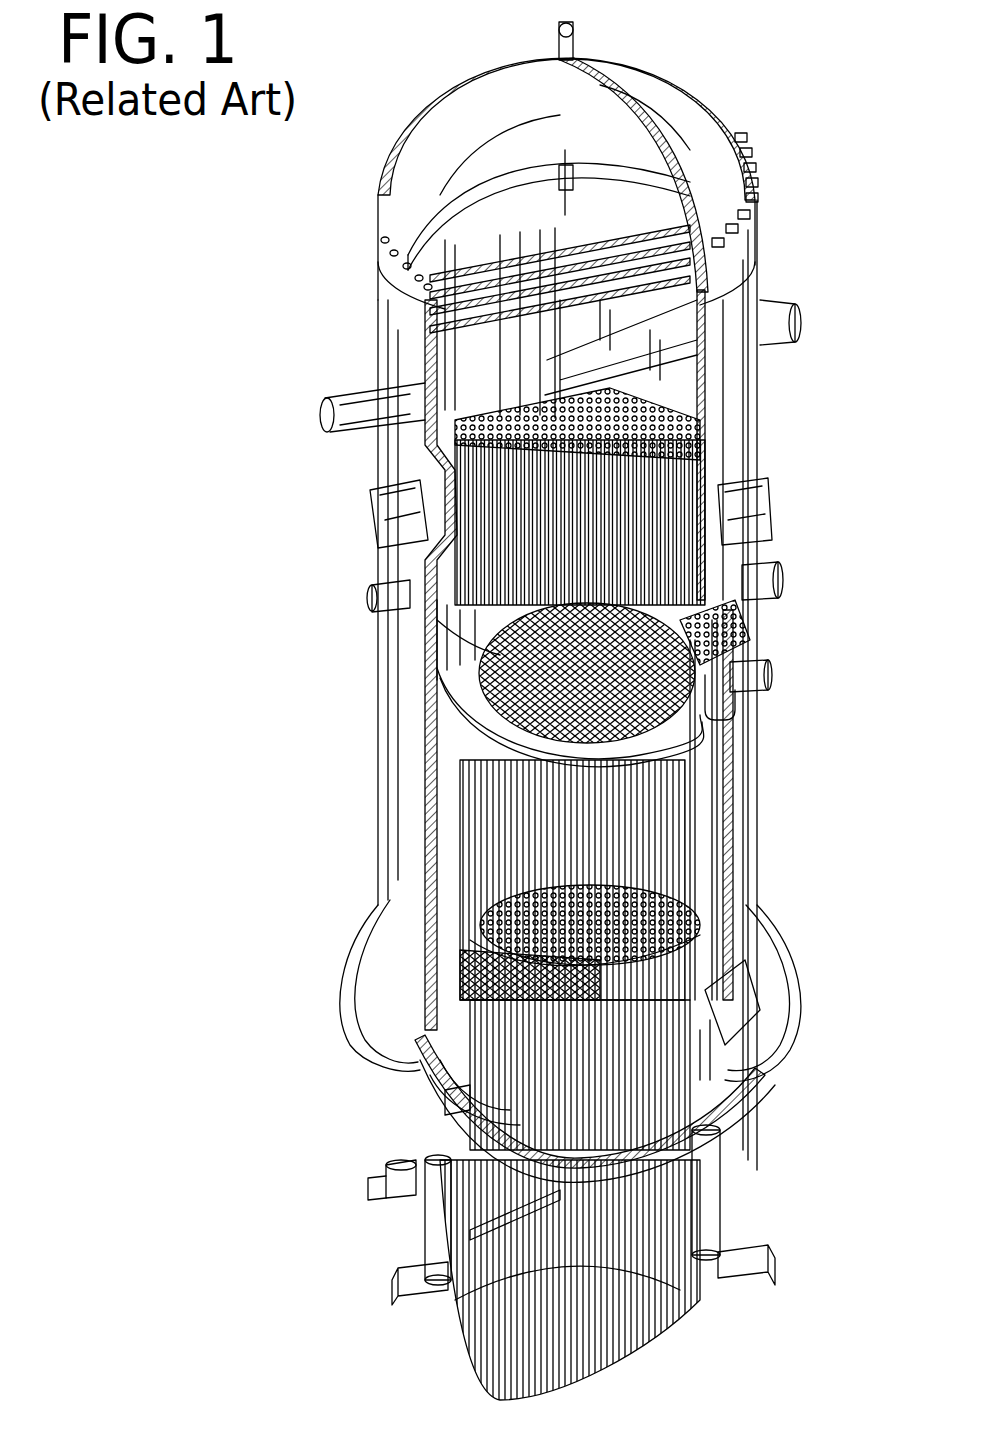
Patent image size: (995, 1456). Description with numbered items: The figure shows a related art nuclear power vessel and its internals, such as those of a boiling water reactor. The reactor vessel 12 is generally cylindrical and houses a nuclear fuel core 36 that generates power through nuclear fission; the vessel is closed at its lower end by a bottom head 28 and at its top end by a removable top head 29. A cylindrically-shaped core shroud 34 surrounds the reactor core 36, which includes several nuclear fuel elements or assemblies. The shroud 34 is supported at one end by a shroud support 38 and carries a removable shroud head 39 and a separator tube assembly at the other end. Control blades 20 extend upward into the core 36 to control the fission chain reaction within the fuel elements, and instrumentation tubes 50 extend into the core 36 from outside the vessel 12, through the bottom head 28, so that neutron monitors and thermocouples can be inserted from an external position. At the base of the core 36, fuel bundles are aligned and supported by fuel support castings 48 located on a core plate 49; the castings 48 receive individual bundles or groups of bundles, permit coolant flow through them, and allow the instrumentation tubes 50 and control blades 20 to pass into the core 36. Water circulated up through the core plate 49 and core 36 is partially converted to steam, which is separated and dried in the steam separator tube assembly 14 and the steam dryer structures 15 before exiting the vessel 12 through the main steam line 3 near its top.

The removable top head 29 is at (690, 130).
The main steam line 3 is at (320, 430).
The steam dryer structures 15 is at (690, 382).
The steam separator tube assembly 14 is at (672, 475).
The removable shroud head 39 is at (435, 718).
The nuclear fuel core 36 is at (655, 745).
The reactor vessel 12 is at (746, 757).
The core shroud 34 is at (718, 810).
The fuel support castings 48 is at (700, 935).
The core plate 49 is at (738, 960).
The bottom head 28 is at (775, 1115).
The control blades 20 is at (440, 1097).
The shroud support 38 is at (412, 1140).
The instrumentation tubes 50 is at (570, 1262).